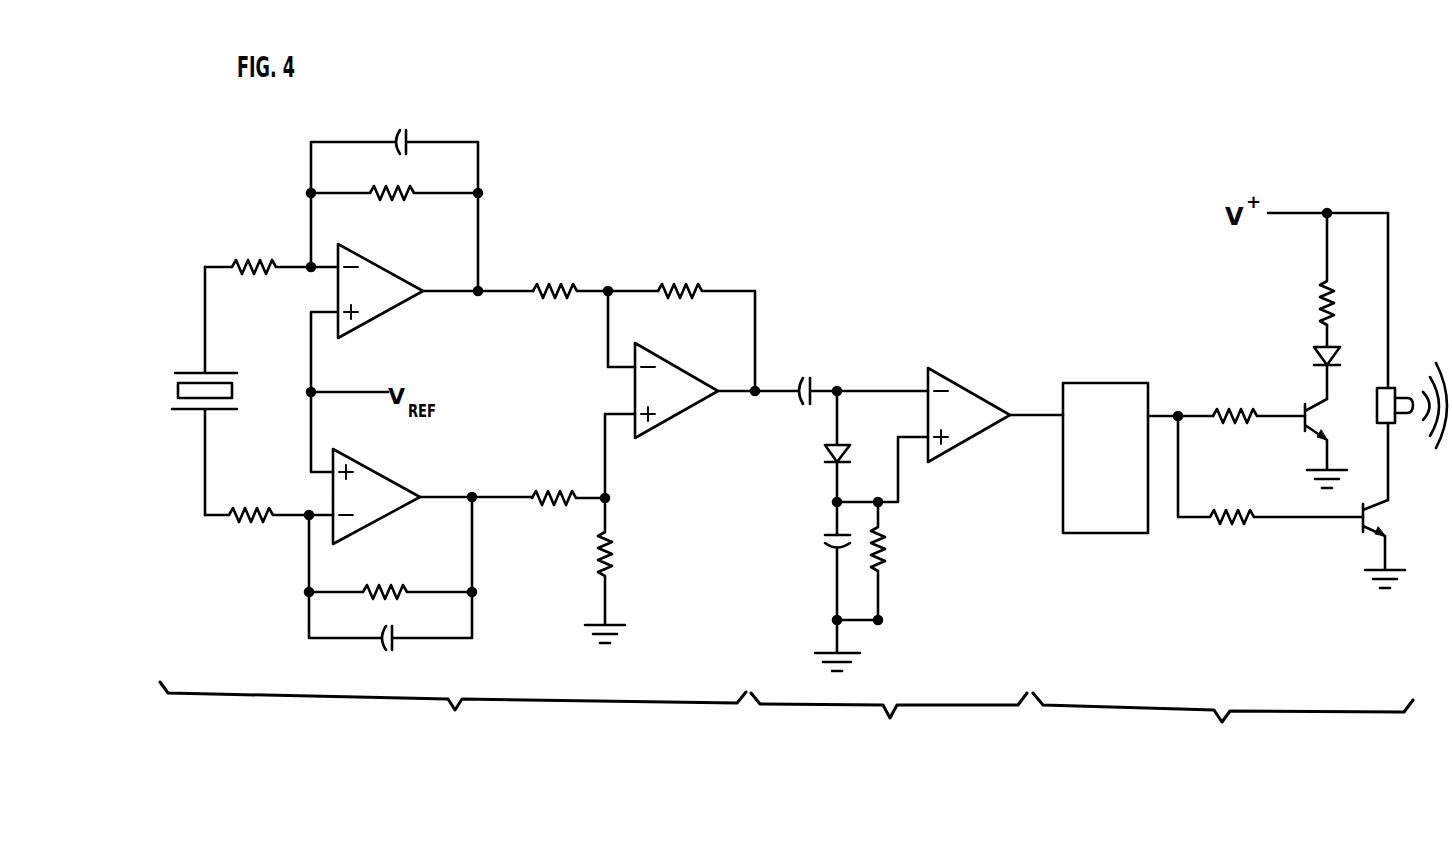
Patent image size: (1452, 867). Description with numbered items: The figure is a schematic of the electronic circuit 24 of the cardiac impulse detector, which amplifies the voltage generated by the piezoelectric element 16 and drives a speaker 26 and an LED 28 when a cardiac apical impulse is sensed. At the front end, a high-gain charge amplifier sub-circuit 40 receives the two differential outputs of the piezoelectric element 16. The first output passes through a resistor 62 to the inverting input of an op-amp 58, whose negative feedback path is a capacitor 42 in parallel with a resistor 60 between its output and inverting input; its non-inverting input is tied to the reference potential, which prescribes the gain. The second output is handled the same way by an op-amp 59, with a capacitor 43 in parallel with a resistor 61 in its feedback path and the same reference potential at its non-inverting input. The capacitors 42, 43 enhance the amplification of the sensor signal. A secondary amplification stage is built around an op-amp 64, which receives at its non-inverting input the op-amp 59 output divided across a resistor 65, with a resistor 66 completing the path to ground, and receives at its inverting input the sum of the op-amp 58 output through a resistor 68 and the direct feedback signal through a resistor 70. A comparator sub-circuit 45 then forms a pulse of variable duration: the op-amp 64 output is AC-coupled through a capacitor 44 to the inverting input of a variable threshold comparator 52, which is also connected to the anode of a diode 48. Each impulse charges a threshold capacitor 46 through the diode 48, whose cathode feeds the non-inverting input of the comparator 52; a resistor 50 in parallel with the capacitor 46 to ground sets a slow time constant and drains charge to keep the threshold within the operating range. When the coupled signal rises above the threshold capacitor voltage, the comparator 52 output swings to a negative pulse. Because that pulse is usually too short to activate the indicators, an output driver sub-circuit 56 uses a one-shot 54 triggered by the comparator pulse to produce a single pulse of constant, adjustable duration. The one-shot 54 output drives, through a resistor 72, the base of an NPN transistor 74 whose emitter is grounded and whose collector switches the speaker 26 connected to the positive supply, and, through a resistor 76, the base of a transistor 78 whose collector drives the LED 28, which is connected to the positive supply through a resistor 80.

The piezoelectric element 16 is at (180, 391).
The electronic circuit 24 is at (781, 222).
The speaker 26 is at (1406, 392).
The LED 28 is at (1321, 346).
The charge amplifier sub-circuit 40 is at (453, 712).
The capacitor 42 is at (400, 130).
The capacitor 43 is at (250, 530).
The capacitor 44 is at (813, 378).
The comparator sub-circuit 45 is at (889, 721).
The threshold capacitor 46 is at (822, 540).
The diode 48 is at (823, 455).
The resistor 50 is at (890, 538).
The variable threshold comparator 52 is at (972, 392).
The one-shot integrated circuit 54 is at (1098, 522).
The output driver sub-circuit 56 is at (1223, 724).
The operational amplifier 58 is at (386, 316).
The operational amplifier 59 is at (385, 480).
The resistor 60 is at (400, 205).
The resistor 61 is at (390, 585).
The resistor 62 is at (250, 258).
The operational amplifier 64 is at (667, 412).
The resistor 65 is at (549, 510).
The resistor 66 is at (612, 545).
The resistor 68 is at (554, 282).
The resistor 70 is at (683, 282).
The resistor 72 is at (1232, 535).
The transistor 74 is at (1372, 534).
The resistor 76 is at (1229, 406).
The transistor 78 is at (1304, 413).
The resistor 80 is at (1321, 283).